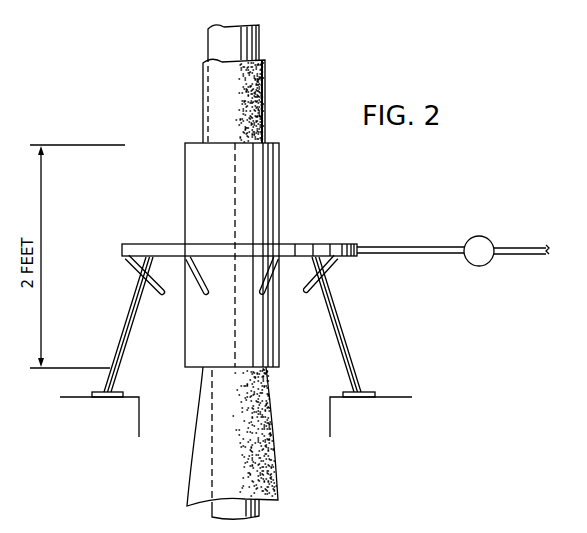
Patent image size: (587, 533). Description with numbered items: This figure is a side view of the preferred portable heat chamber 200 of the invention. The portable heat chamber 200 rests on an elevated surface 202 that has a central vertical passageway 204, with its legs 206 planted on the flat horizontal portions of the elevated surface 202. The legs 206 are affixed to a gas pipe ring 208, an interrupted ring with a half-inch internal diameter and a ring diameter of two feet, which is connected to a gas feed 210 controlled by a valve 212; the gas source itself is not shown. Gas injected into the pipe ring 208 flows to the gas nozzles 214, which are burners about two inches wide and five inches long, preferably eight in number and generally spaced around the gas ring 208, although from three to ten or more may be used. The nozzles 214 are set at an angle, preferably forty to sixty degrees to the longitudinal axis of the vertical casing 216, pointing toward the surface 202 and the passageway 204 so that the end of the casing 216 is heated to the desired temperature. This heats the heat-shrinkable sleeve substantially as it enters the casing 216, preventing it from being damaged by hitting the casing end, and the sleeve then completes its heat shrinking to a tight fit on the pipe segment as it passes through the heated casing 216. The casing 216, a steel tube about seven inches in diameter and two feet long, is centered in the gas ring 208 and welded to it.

The portable heat chamber 200 is at (299, 219).
The elevated surface 202 is at (123, 413).
The central vertical passageway 204 is at (169, 428).
The legs 206 is at (127, 331).
The gas pipe ring 208 is at (178, 246).
The gas feed 210 is at (418, 246).
The valve 212 is at (488, 237).
The gas nozzles 214 is at (128, 276).
The vertical casing 216 is at (200, 190).